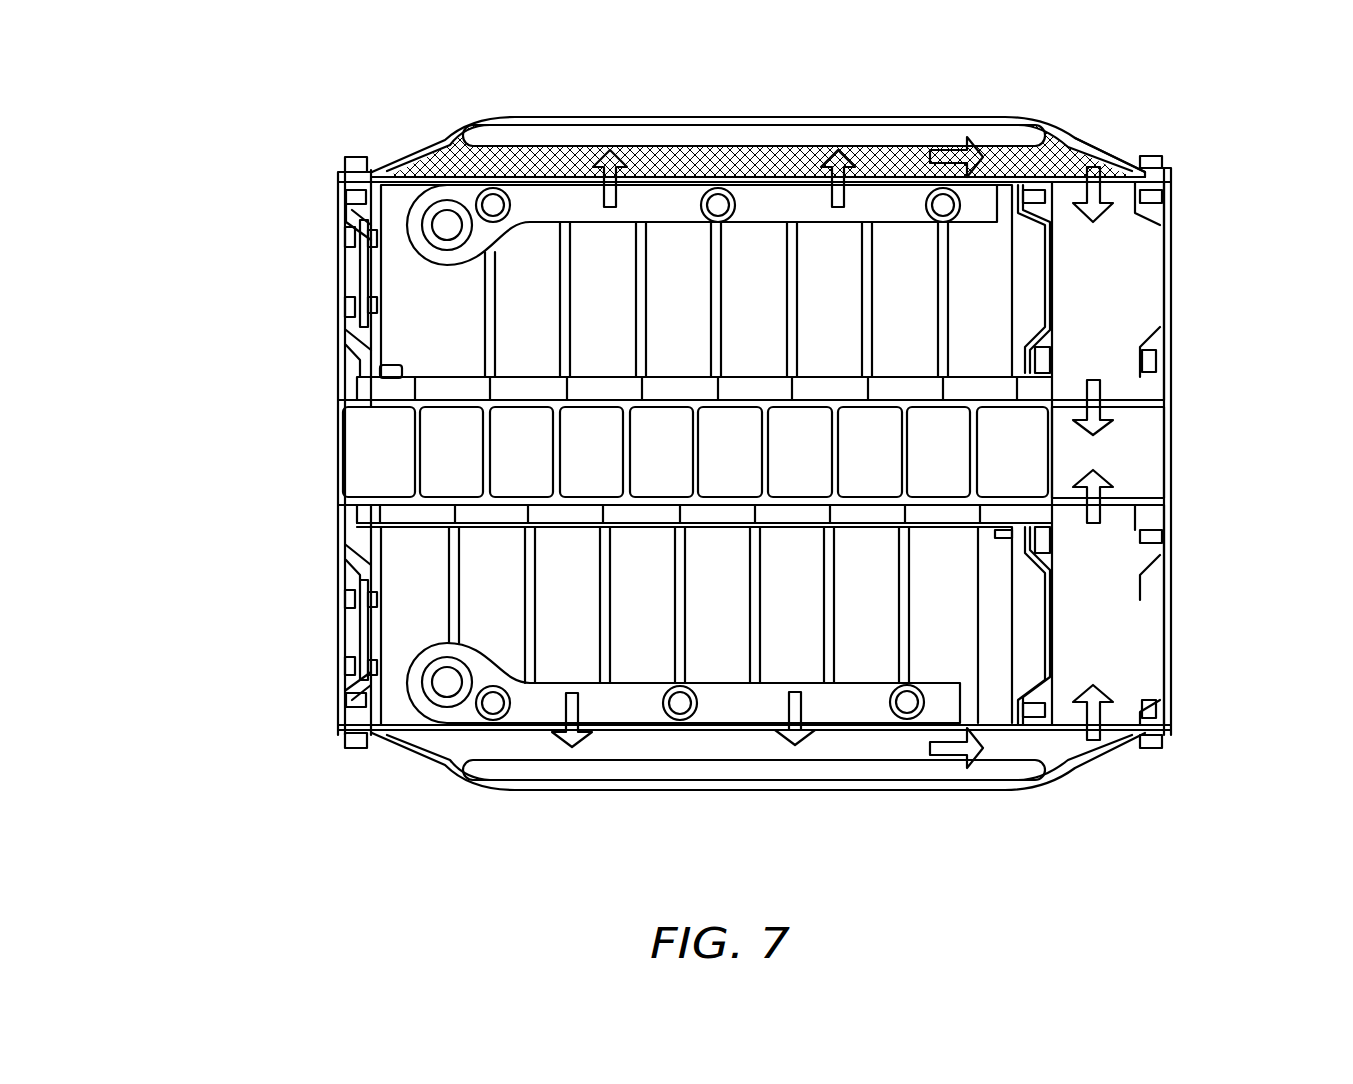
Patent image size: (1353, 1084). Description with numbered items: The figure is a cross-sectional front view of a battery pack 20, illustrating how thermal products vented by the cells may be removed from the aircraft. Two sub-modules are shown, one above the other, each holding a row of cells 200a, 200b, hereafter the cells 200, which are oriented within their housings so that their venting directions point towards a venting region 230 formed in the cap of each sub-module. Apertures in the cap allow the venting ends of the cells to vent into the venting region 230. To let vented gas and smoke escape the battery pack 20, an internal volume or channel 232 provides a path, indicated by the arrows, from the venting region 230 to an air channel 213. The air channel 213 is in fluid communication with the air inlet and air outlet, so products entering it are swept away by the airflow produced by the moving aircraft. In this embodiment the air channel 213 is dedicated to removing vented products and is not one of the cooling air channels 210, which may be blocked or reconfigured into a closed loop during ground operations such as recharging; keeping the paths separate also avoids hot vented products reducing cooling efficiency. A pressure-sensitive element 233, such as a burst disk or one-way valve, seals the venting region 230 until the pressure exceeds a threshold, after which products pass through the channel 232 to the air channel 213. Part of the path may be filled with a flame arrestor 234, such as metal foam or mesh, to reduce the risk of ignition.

The battery pack 20 is at (352, 78).
The cells 200 is at (208, 336).
The cells 200a is at (452, 357).
The cells 200b is at (427, 547).
The cooling air channels 210 is at (1020, 462).
The air channel 213 is at (1143, 443).
The venting region 230 is at (440, 132).
The channel 232 is at (1143, 277).
The pressure-sensitive element 233 is at (1115, 160).
The flame arrestor 234 is at (557, 147).